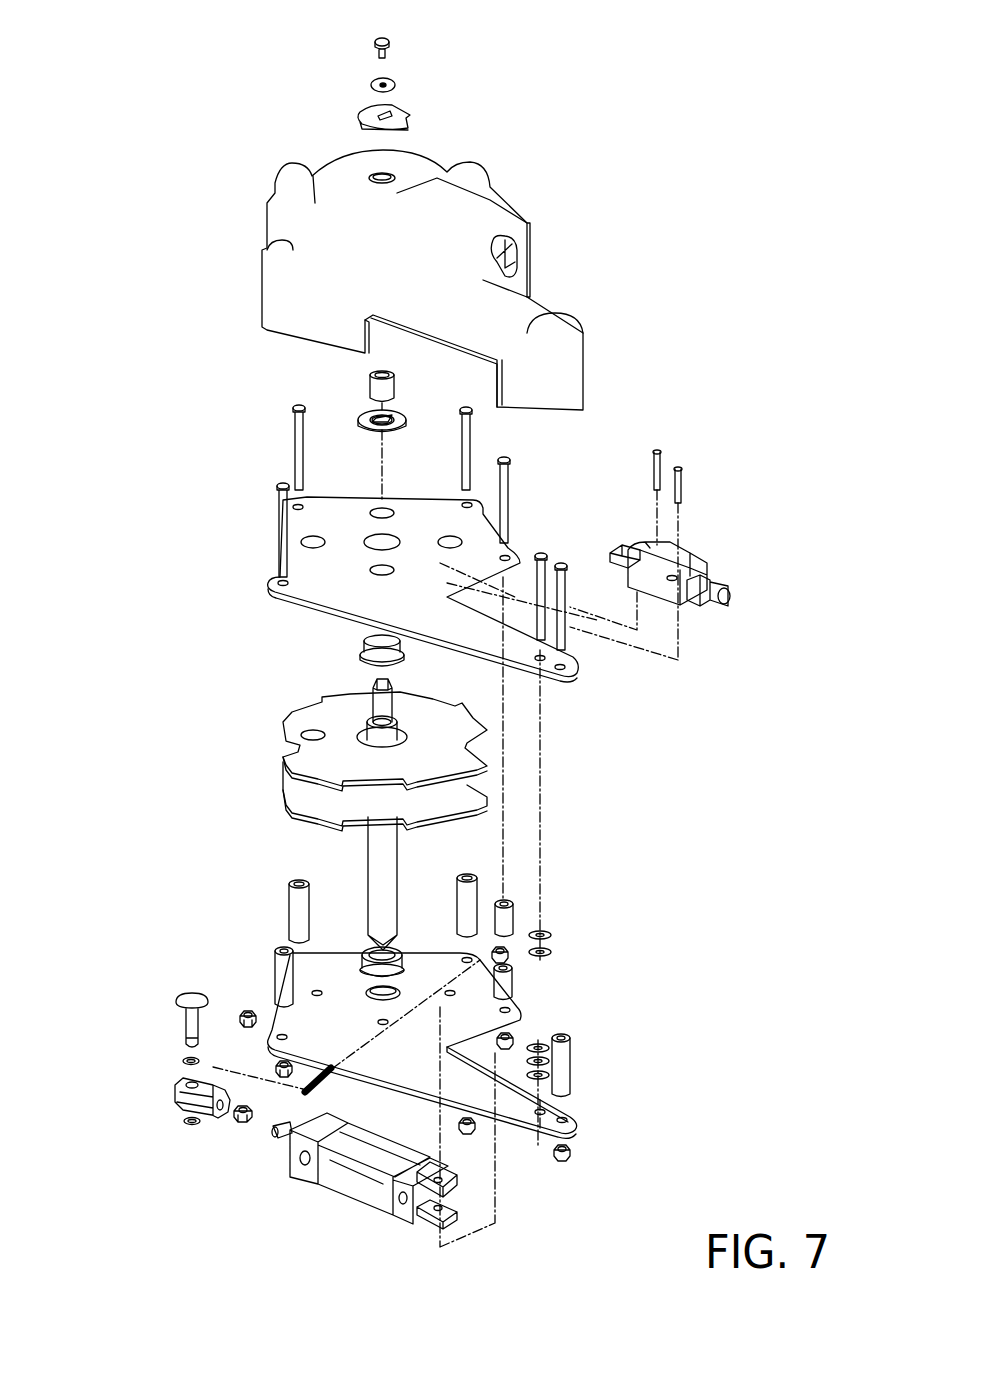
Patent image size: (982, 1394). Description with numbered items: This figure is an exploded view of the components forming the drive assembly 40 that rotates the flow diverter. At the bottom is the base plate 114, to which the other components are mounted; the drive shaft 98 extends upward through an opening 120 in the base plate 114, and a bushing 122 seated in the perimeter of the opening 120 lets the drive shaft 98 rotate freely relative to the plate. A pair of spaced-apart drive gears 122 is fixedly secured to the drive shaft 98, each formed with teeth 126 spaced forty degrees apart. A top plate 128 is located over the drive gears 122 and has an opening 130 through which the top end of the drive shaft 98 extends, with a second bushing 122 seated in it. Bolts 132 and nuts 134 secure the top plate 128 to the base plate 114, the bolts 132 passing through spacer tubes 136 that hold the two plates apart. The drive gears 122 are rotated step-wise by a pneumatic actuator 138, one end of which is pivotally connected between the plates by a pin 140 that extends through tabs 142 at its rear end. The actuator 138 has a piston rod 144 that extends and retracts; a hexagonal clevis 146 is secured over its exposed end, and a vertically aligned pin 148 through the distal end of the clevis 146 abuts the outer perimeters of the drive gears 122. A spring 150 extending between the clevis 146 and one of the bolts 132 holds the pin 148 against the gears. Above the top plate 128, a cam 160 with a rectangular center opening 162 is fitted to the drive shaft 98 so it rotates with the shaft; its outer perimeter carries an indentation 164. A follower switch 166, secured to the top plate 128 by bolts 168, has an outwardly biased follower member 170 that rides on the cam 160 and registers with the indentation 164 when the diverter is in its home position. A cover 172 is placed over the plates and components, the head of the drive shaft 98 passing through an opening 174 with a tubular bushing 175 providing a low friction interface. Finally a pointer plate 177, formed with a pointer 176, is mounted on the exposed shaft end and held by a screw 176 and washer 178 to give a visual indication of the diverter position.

The drive assembly 40 is at (185, 356).
The drive shaft 98 is at (372, 900).
The base plate 114 is at (428, 1066).
The opening 120 is at (370, 996).
The drive gear 122 is at (358, 650).
The teeth 126 is at (490, 783).
The top plate 128 is at (479, 634).
The opening 130 is at (373, 548).
The bolt 132 is at (290, 425).
The nut 134 is at (472, 1133).
The spacer tube 136 is at (292, 930).
The pneumatic actuator 138 is at (325, 1202).
The pin 140 is at (508, 673).
The tab 142 is at (433, 1160).
The piston rod 144 is at (274, 1130).
The clevis 146 is at (175, 1098).
The pin 148 is at (175, 995).
The spring 150 is at (335, 1085).
The cam 160 is at (363, 433).
The center opening 162 is at (400, 420).
The indentation 164 is at (397, 443).
The follower switch 166 is at (695, 558).
The bolt 168 is at (665, 466).
The follower member 170 is at (610, 556).
The cover 172 is at (401, 286).
The opening 174 is at (380, 186).
The tubular bushing 175 is at (370, 389).
The screw 176 is at (398, 48).
The pointer plate 177 is at (408, 117).
The washer 178 is at (405, 86).